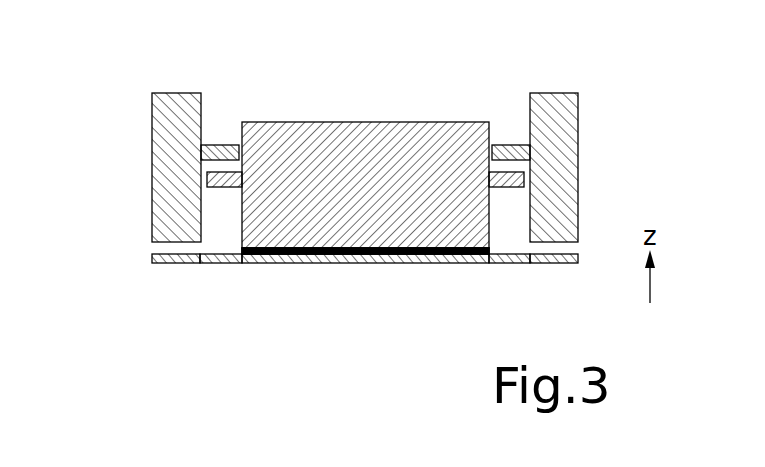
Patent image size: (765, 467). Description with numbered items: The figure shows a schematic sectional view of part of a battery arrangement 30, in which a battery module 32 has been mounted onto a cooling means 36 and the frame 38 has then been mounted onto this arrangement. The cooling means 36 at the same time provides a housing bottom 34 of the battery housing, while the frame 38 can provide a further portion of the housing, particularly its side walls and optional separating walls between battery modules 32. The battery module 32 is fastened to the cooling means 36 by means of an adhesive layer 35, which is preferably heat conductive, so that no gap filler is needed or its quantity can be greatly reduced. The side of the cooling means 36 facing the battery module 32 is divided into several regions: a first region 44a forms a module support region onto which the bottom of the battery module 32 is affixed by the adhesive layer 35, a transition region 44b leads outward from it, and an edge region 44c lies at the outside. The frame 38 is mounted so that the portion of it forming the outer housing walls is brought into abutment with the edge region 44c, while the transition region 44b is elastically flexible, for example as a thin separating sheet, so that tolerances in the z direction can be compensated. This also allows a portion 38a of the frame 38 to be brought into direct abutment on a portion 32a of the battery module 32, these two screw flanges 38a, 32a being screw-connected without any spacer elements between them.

The battery arrangement 30 is at (166, 73).
The battery module 32 is at (443, 135).
The portion of the battery module 32a is at (215, 180).
The housing bottom 34 is at (292, 258).
The adhesive layer 35 is at (393, 250).
The cooling means 36 is at (365, 251).
The frame 38 is at (165, 135).
The portion of the frame 38a is at (219, 152).
The first region (module support region) 44a is at (489, 263).
The transition region 44b is at (200, 263).
The edge region 44c is at (200, 281).